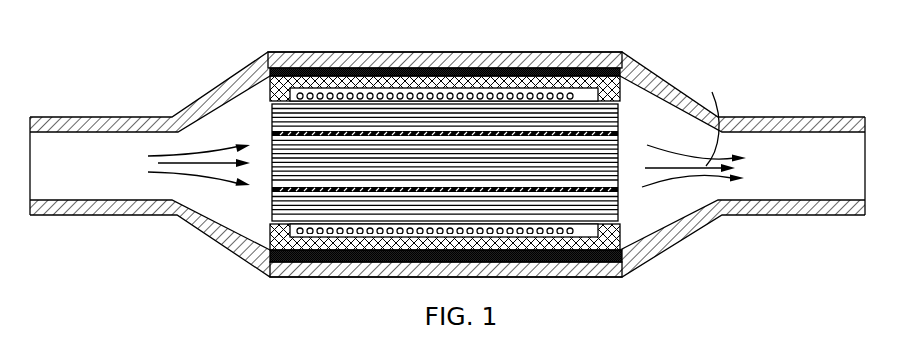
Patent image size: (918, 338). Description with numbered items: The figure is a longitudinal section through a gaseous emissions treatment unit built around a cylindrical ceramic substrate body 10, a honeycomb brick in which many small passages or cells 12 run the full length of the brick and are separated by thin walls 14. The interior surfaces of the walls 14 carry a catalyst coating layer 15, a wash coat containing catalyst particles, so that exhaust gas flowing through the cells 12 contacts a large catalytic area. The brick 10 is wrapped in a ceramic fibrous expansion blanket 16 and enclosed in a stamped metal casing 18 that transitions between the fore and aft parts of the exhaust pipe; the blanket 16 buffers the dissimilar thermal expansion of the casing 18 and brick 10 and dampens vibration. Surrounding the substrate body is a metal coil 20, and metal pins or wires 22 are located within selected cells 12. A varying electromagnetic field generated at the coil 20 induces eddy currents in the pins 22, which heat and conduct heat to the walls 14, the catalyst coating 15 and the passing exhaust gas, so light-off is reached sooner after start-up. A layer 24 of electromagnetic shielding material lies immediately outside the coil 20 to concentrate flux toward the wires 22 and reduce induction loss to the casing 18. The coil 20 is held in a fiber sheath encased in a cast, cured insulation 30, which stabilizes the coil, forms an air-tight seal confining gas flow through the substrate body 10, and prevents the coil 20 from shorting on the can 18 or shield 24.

The substrate body 10 is at (645, 183).
The cells 12 is at (618, 118).
The walls 14 is at (320, 133).
The catalyst coating layer 15 is at (266, 116).
The expansion blanket 16 is at (363, 84).
The casing 18 is at (400, 62).
The metal coil 20 is at (503, 95).
The metal pins 22 is at (397, 190).
The shielding layer 24 is at (458, 73).
The cast insulation 30 is at (548, 92).